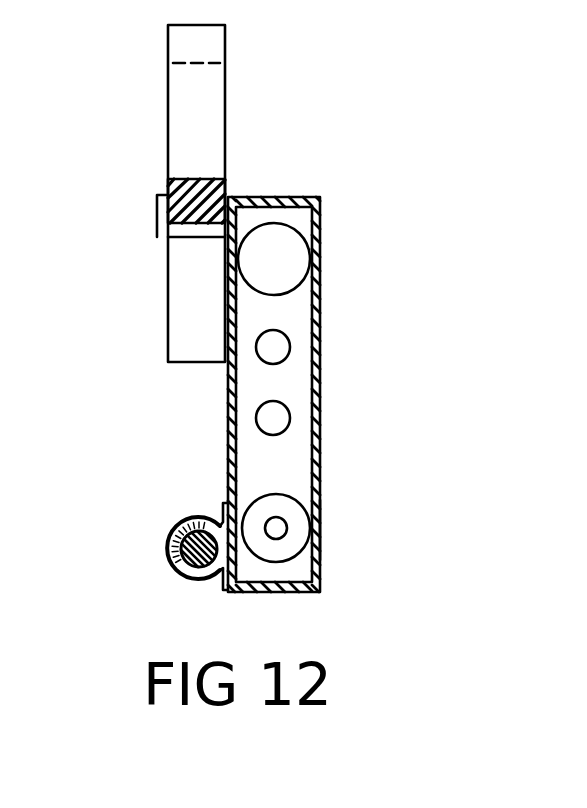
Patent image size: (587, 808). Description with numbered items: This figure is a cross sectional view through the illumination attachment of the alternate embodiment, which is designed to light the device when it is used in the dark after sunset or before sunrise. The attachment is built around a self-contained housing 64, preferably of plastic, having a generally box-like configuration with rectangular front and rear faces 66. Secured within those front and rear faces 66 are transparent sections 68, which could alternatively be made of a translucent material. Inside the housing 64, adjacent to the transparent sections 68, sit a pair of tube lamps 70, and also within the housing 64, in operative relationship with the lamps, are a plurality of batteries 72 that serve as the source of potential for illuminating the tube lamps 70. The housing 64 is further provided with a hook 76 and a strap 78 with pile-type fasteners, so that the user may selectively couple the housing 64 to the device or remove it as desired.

The housing 64 is at (321, 532).
The front and rear faces 66 is at (228, 482).
The transparent sections 68 is at (228, 422).
The tube lamps 70 is at (265, 418).
The batteries 72 is at (286, 256).
The hook 76 is at (170, 231).
The strap 78 is at (184, 572).